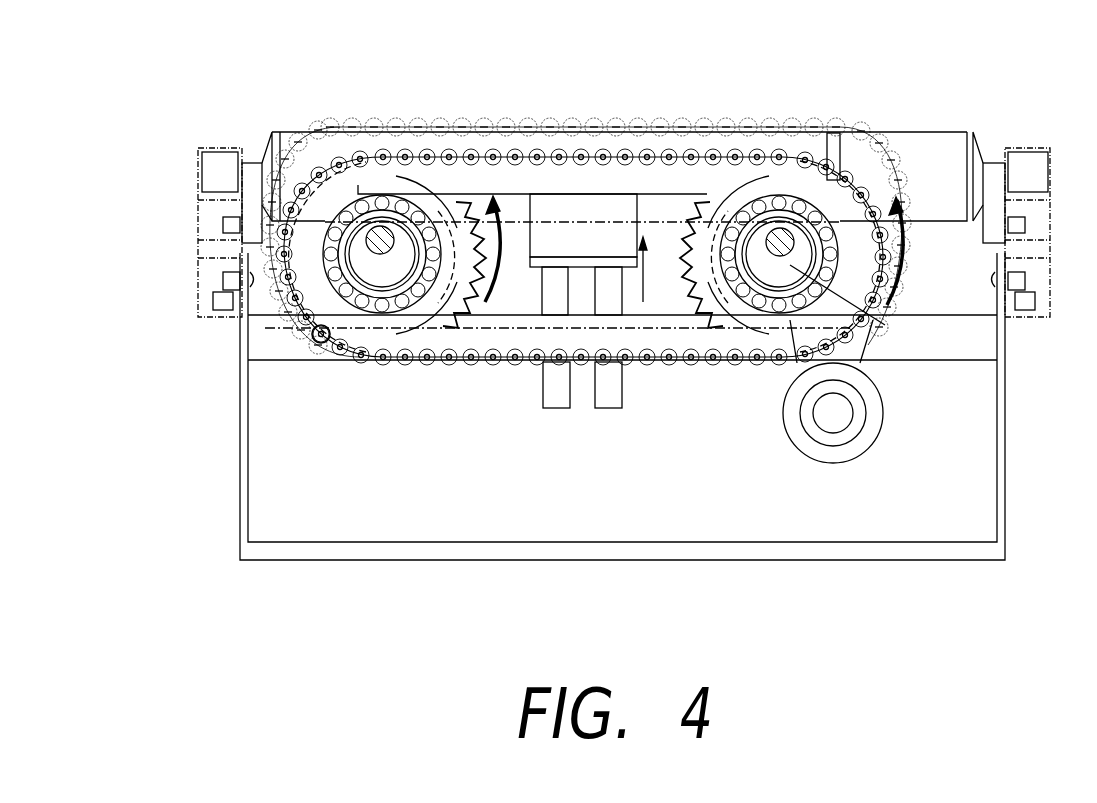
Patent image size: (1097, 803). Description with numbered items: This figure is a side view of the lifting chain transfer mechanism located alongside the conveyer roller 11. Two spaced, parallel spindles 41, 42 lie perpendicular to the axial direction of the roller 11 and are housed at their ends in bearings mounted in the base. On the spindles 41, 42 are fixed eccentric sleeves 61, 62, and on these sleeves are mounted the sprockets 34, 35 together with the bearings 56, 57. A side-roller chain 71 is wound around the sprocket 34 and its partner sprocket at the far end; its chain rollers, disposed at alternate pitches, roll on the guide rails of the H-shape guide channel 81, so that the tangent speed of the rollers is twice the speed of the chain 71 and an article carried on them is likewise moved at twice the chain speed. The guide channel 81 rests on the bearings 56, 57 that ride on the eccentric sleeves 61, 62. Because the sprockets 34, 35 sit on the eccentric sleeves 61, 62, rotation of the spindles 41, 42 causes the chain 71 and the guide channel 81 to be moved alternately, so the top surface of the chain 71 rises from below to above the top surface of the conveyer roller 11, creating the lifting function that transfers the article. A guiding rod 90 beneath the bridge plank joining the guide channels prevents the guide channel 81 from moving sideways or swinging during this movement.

The conveyer roller 11 is at (970, 132).
The sprocket 34 is at (473, 197).
The sprocket 35 is at (822, 205).
The spindle 41 is at (381, 226).
The spindle 42 is at (781, 228).
The bearing 56 is at (407, 213).
The bearing 57 is at (838, 168).
The eccentric sleeve 61 is at (330, 333).
The eccentric sleeve 62 is at (873, 332).
The side-roller chain 71 is at (630, 148).
The H-shape guide channel 81 is at (665, 185).
The guiding rod 90 is at (553, 392).